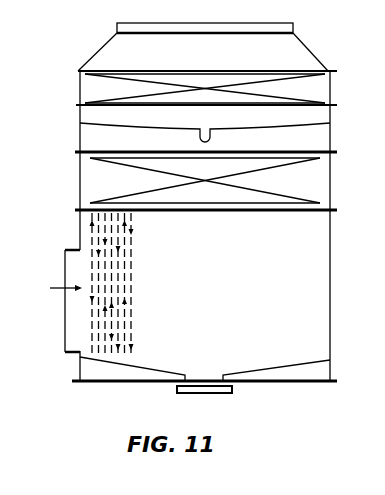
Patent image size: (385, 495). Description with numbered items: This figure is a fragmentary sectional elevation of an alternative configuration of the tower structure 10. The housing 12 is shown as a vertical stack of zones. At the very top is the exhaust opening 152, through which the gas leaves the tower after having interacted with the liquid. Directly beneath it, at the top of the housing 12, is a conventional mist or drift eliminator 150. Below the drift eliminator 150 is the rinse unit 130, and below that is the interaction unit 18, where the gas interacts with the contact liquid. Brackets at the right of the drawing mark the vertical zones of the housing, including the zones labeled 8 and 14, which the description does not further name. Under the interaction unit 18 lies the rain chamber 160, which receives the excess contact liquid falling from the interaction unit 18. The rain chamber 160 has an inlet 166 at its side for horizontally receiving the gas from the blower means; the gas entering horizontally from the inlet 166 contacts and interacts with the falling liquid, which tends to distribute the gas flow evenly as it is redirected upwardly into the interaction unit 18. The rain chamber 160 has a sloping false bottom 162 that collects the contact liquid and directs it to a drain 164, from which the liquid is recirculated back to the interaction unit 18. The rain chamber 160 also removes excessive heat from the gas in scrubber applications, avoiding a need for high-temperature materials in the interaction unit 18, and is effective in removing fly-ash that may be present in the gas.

The housing 12 is at (356, 0).
The exhaust opening 152 is at (117, 26).
The drift eliminator 150 is at (80, 104).
The rinse unit 130 is at (80, 138).
The interaction unit 18 is at (80, 193).
The tower structure 10 is at (344, 103).
The middle stage 8 is at (344, 155).
The lower chamber stage 14 is at (344, 383).
The rain chamber 160 is at (216, 278).
The inlet 166 is at (65, 330).
The sloping false bottom 162 is at (228, 374).
The drain 164 is at (212, 394).